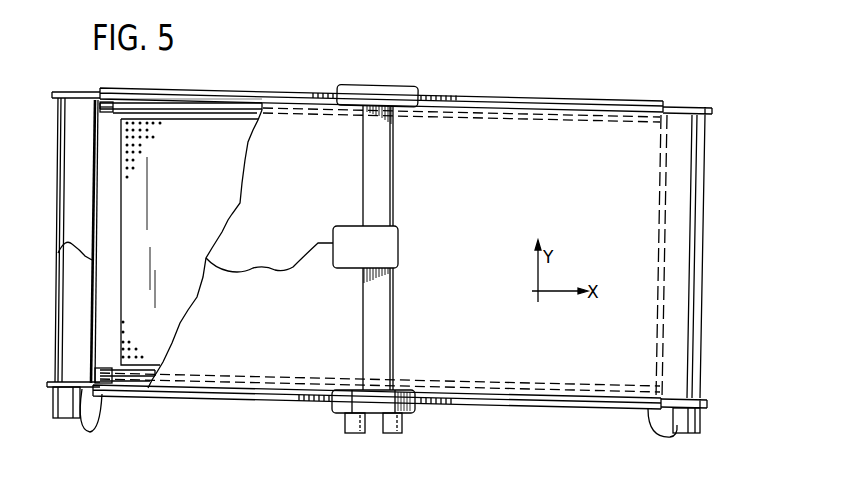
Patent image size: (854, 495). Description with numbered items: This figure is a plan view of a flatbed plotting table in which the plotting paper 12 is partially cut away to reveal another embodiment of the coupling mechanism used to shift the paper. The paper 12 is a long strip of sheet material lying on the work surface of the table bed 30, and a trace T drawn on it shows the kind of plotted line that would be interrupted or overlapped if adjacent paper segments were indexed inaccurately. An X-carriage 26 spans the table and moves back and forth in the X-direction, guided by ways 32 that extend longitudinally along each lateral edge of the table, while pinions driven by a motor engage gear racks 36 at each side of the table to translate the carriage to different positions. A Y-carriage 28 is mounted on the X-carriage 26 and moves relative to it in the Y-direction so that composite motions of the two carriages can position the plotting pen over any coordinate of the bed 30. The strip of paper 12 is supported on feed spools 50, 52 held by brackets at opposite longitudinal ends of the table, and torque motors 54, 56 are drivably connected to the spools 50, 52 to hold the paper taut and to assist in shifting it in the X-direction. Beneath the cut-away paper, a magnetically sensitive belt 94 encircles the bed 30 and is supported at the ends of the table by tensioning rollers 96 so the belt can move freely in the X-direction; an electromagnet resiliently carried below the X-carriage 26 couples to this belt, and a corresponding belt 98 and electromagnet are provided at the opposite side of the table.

The plotting paper 12 is at (241, 196).
The X-carriage 26 is at (380, 318).
The Y-carriage 28 is at (418, 232).
The table bed 30 is at (194, 131).
The ways 32 is at (562, 110).
The gear racks 36 is at (499, 101).
The feed spool 50 is at (50, 382).
The feed spool 52 is at (703, 398).
The torque motor 54 is at (53, 410).
The torque motor 56 is at (697, 415).
The magnetically sensitive belt 94 is at (235, 112).
The tensioning rollers 96 is at (108, 102).
The belt 98 is at (150, 365).
The trace T is at (242, 272).